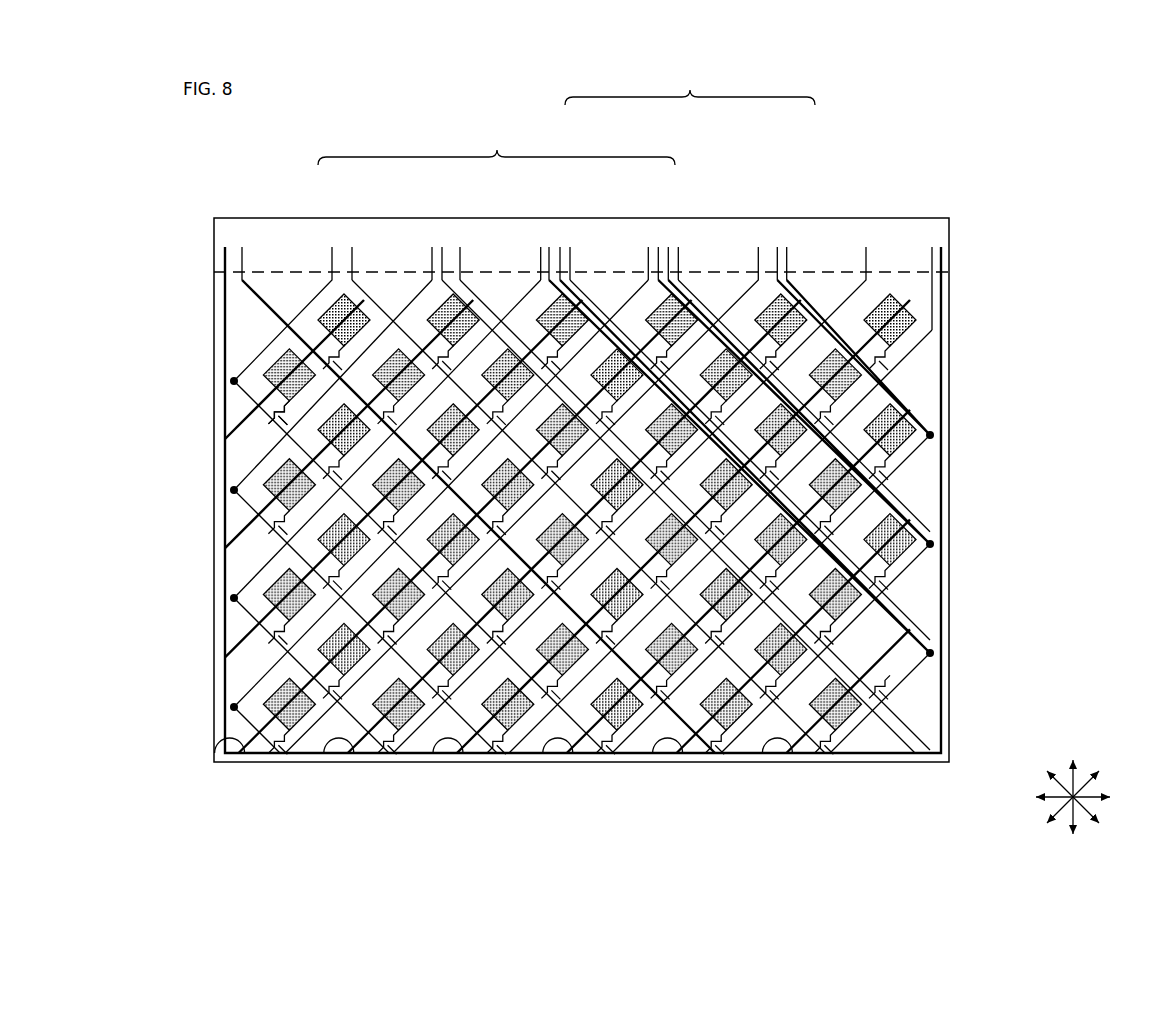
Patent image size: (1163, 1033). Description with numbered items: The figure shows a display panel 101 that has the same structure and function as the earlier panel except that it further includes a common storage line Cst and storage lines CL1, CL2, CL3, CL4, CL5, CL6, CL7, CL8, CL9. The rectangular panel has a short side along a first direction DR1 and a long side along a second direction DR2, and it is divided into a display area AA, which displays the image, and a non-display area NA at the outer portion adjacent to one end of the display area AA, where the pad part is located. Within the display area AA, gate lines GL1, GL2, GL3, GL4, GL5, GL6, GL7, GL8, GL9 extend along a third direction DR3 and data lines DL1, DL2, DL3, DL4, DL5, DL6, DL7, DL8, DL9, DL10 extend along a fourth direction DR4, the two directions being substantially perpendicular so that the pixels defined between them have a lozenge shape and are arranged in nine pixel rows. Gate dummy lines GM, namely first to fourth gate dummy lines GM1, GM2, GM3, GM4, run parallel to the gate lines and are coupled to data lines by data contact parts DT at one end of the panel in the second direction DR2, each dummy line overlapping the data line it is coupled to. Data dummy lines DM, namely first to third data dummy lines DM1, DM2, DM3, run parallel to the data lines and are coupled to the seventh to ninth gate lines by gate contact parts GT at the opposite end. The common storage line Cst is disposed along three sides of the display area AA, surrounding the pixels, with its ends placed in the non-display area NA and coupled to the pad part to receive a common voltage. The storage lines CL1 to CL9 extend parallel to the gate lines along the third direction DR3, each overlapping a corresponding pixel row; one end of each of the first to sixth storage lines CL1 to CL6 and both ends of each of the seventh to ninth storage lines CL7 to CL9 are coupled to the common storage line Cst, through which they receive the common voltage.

The display panel 101 is at (896, 184).
The non-display area NA is at (950, 230).
The display area AA is at (945, 331).
The common storage line Cst is at (912, 300).
The gate dummy lines GM is at (496, 148).
The first gate dummy line GM1 is at (332, 247).
The second gate dummy line GM2 is at (432, 247).
The third gate dummy line GM3 is at (541, 247).
The fourth gate dummy line GM4 is at (648, 247).
The data dummy lines DM is at (690, 89).
The first data dummy line DM1 is at (562, 247).
The second data dummy line DM2 is at (670, 247).
The third data dummy line DM3 is at (787, 247).
The first gate line GL1 is at (413, 300).
The second gate line GL2 is at (522, 300).
The third gate line GL3 is at (630, 300).
The fourth gate line GL4 is at (740, 300).
The fifth gate line GL5 is at (848, 300).
The sixth gate line GL6 is at (912, 353).
The seventh gate line GL7 is at (915, 452).
The eighth gate line GL8 is at (915, 560).
The ninth gate line GL9 is at (915, 668).
The first data line DL1 is at (268, 753).
The second data line DL2 is at (376, 753).
The third data line DL3 is at (486, 753).
The fourth data line DL4 is at (594, 753).
The fifth data line DL5 is at (706, 753).
The sixth data line DL6 is at (812, 753).
The seventh data line DL7 is at (905, 740).
The eighth data line DL8 is at (910, 613).
The ninth data line DL9 is at (910, 513).
The tenth data line DL10 is at (905, 395).
The first storage line CL1 is at (225, 439).
The second storage line CL2 is at (225, 548).
The third storage line CL3 is at (225, 657).
The fourth storage line CL4 is at (226, 753).
The fifth storage line CL5 is at (334, 753).
The sixth storage line CL6 is at (442, 753).
The seventh storage line CL7 is at (551, 753).
The eighth storage line CL8 is at (662, 753).
The ninth storage line CL9 is at (770, 753).
The data contact parts DT is at (234, 707).
The gate contact parts GT is at (934, 653).
The first direction DR1 is at (1063, 782).
The second direction DR2 is at (1093, 797).
The third direction DR3 is at (1083, 784).
The fourth direction DR4 is at (1054, 784).